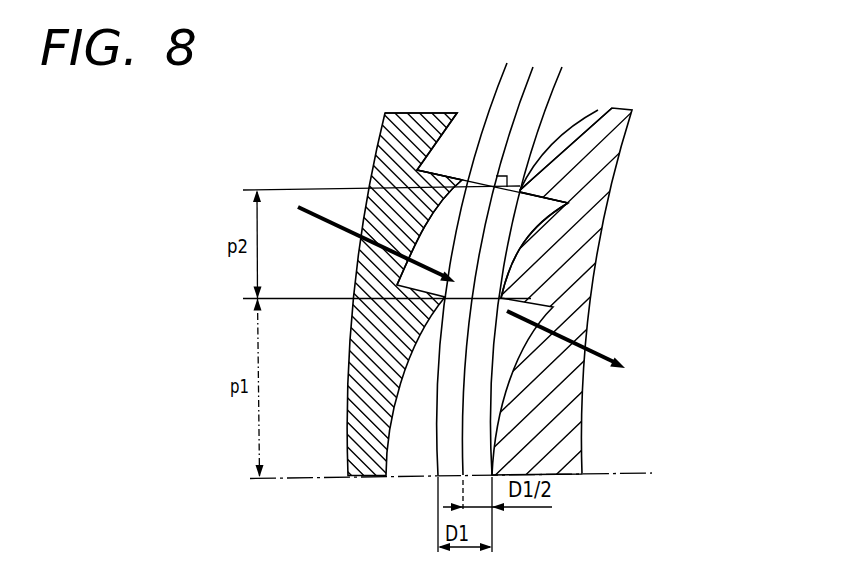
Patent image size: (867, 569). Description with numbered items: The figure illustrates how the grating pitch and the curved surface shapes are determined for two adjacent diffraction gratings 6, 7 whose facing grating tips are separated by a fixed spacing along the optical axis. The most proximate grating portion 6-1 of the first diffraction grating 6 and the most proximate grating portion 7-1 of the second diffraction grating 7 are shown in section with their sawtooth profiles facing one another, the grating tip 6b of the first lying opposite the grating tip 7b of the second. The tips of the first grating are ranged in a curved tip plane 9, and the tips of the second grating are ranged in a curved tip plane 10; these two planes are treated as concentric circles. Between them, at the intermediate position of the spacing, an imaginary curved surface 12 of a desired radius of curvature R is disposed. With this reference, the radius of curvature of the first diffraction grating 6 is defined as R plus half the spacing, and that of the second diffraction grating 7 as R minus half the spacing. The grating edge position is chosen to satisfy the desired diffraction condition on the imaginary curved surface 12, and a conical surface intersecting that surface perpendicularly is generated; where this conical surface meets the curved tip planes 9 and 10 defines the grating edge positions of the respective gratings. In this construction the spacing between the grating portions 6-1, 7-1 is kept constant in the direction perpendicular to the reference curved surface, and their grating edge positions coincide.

The diffraction grating 6 is at (363, 405).
The grating portion 6-1 is at (410, 128).
The grating tip 6b is at (462, 178).
The diffraction grating 7 is at (562, 420).
The grating portion 7-1 is at (592, 172).
The grating tip 7b is at (522, 196).
The curved tip plane 9 is at (505, 72).
The curved surface 12 is at (535, 70).
The curved tip plane 10 is at (552, 92).